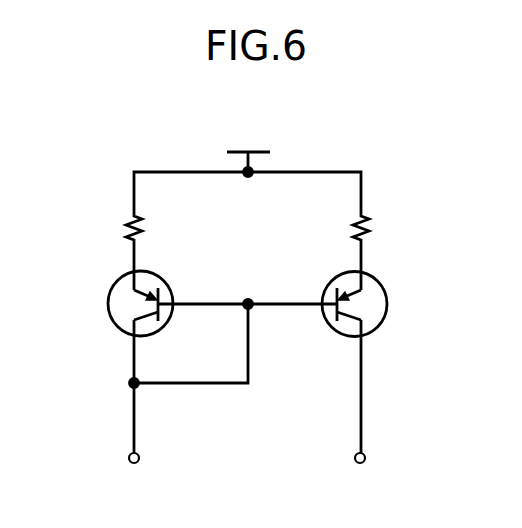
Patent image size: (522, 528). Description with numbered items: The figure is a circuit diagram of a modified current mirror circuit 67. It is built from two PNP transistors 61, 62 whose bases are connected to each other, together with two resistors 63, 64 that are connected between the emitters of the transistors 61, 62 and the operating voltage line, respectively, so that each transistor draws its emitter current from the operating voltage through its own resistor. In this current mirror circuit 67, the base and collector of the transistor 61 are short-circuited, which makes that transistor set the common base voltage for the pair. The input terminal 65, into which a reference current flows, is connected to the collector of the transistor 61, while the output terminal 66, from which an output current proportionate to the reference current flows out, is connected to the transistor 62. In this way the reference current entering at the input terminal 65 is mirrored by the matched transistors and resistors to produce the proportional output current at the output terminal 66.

The PNP transistor 61 is at (108, 304).
The PNP transistor 62 is at (387, 304).
The resistor 63 is at (129, 228).
The resistor 64 is at (369, 228).
The input terminal 65 is at (129, 462).
The output terminal 66 is at (366, 461).
The current mirror circuit 67 is at (403, 204).